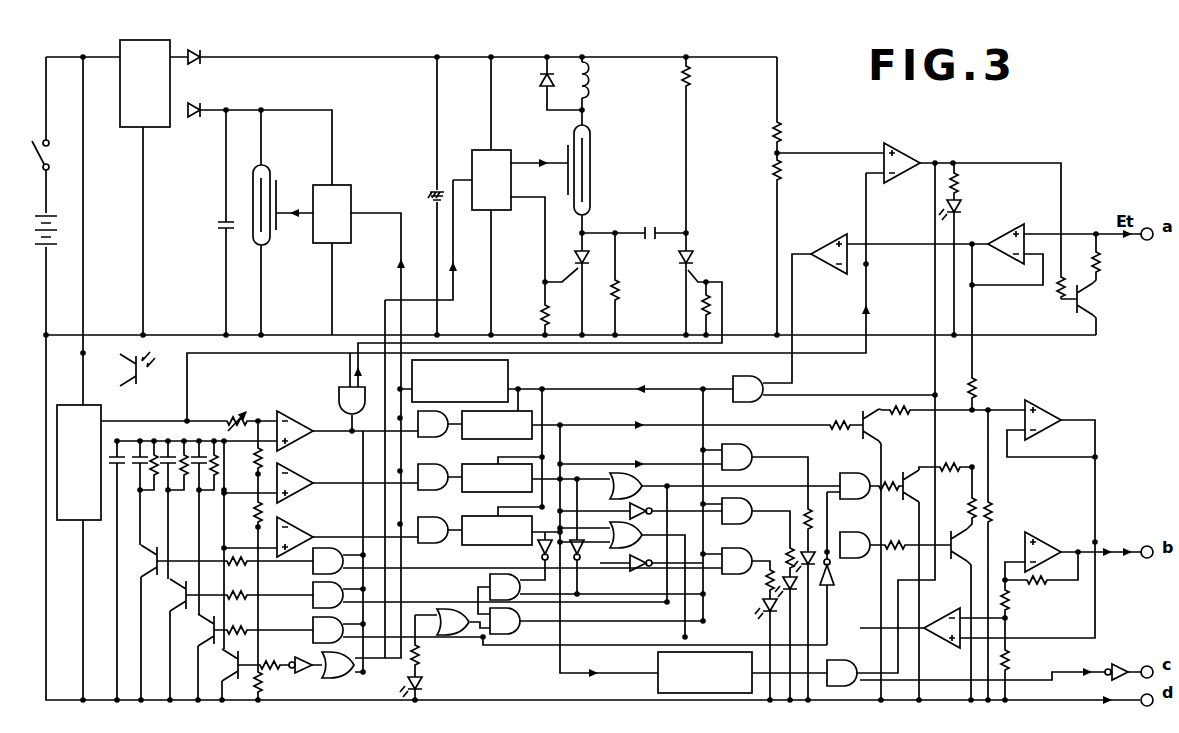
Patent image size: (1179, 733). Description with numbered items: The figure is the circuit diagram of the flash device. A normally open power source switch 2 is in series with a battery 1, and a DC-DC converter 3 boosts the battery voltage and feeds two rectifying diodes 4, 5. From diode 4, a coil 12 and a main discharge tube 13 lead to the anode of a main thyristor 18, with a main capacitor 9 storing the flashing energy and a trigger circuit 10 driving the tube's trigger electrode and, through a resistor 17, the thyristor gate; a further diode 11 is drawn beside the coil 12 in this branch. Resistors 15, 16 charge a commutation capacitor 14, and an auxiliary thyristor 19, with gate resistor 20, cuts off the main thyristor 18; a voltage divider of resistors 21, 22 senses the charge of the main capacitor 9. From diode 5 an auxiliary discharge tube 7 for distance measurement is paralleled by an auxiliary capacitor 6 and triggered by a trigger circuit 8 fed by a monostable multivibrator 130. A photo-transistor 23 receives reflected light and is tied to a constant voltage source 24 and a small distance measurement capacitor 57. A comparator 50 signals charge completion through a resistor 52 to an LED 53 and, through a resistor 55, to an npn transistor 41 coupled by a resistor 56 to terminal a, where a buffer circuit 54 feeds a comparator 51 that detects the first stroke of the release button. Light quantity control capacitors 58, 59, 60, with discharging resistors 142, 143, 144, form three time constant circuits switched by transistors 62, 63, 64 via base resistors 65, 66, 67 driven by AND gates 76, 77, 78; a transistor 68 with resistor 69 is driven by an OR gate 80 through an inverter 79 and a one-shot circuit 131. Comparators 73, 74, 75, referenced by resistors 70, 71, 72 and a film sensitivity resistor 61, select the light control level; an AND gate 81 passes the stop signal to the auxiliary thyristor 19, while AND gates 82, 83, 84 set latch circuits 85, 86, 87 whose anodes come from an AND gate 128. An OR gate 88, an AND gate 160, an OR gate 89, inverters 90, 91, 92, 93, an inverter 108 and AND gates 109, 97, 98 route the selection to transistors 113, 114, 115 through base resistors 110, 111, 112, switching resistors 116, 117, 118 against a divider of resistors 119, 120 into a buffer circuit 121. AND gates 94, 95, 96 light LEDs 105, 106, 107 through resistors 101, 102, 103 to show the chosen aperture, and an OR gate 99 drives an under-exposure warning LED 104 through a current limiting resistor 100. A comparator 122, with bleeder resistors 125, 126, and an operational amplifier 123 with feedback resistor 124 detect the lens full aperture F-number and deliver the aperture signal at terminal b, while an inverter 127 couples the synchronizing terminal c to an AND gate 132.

The battery 1 is at (32, 244).
The power source switch 2 is at (36, 157).
The DC-DC converter 3 is at (146, 40).
The rectifying diode 4 is at (195, 50).
The rectifying diode 5 is at (195, 103).
The auxiliary capacitor 6 is at (218, 225).
The auxiliary discharge tube 7 is at (269, 174).
The trigger circuit 8 is at (351, 186).
The main capacitor 9 is at (430, 193).
The trigger circuit 10 is at (511, 151).
The diode 11 is at (540, 82).
The coil 12 is at (588, 83).
The main discharge tube 13 is at (591, 163).
The commutation capacitor 14 is at (645, 226).
The resistor 15 is at (691, 80).
The resistor 16 is at (620, 289).
The resistor 17 is at (541, 315).
The main thyristor 18 is at (588, 257).
The auxiliary thyristor 19 is at (679, 258).
The resistor 20 is at (712, 305).
The resistor 21 is at (782, 130).
The resistor 22 is at (782, 176).
The photo-transistor 23 is at (120, 352).
The constant voltage source 24 is at (90, 404).
The npn transistor 41 is at (1092, 303).
The comparator 50 is at (903, 152).
The comparator 51 is at (824, 240).
The resistor 52 is at (959, 182).
The light emitting diode 53 is at (964, 206).
The buffer circuit 54 is at (1014, 229).
The resistor 55 is at (1066, 278).
The resistor 56 is at (1101, 268).
The distance measurement capacitor 57 is at (125, 463).
The capacitor 58 is at (152, 456).
The second capacitor 59 is at (182, 456).
The third capacitor 60 is at (212, 456).
The resistor 61 is at (256, 407).
The switching transistor 62 is at (155, 562).
The switching transistor 63 is at (184, 596).
The switching transistor 64 is at (212, 631).
The base resistor 65 is at (237, 565).
The base resistor 66 is at (237, 599).
The base resistor 67 is at (238, 634).
The npn transistor 68 is at (236, 666).
The resistor 69 is at (275, 662).
The resistor 70 is at (261, 682).
The resistor 71 is at (254, 514).
The resistor 72 is at (254, 459).
The comparator 73 is at (294, 423).
The comparator 74 is at (300, 478).
The comparator 75 is at (300, 530).
The AND gate 76 is at (315, 574).
The AND gate 77 is at (313, 606).
The AND gate 78 is at (311, 641).
The inverter 79 is at (305, 674).
The OR gate 80 is at (340, 677).
The AND gate 81 is at (342, 390).
The AND gate 82 is at (434, 438).
The AND gate 83 is at (434, 490).
The AND gate 84 is at (436, 543).
The latch circuit 85 is at (532, 413).
The latch circuit 86 is at (477, 464).
The latch circuit 87 is at (484, 545).
The OR gate 88 is at (640, 476).
The OR gate 89 is at (640, 527).
The inverter 90 is at (645, 511).
The inverter 91 is at (644, 571).
The inverter 92 is at (566, 540).
The inverter 93 is at (539, 550).
The AND gate 94 is at (752, 448).
The AND gate 95 is at (753, 520).
The AND gate 96 is at (732, 576).
The AND gate 97 is at (527, 579).
The AND gate 98 is at (512, 638).
The OR gate 99 is at (452, 609).
The current limiting resistor 100 is at (407, 646).
The resistor 101 is at (766, 582).
The resistor 102 is at (786, 557).
The resistor 103 is at (804, 518).
The LED 104 is at (424, 685).
The LED 105 is at (766, 616).
The LED 106 is at (797, 595).
The LED 107 is at (813, 553).
The inverter 108 is at (834, 573).
The AND gate 109 is at (856, 532).
The base resistor 110 is at (838, 412).
The base resistor 111 is at (889, 480).
The base resistor 112 is at (894, 540).
The npn transistor 113 is at (872, 425).
The npn transistor 114 is at (911, 484).
The npn transistor 115 is at (955, 543).
The resistor 116 is at (897, 408).
The resistor 117 is at (948, 464).
The resistor 118 is at (968, 508).
The resistor 119 is at (977, 386).
The resistor 120 is at (992, 508).
The buffer circuit 121 is at (1052, 406).
The comparator 122 is at (944, 645).
The operational amplifier 123 is at (1037, 534).
The resistor 124 is at (1034, 578).
The resistor 125 is at (1010, 600).
The resistor 126 is at (1010, 660).
The inverter 127 is at (1120, 662).
The AND gate 128 is at (734, 376).
The monostable multivibrator 130 is at (508, 376).
The monostable multivibrator 131 is at (658, 684).
The AND gate 132 is at (854, 662).
The discharging resistor 142 is at (145, 467).
The discharging resistor 143 is at (172, 467).
The discharging resistor 144 is at (202, 467).
The AND gate 160 is at (870, 474).